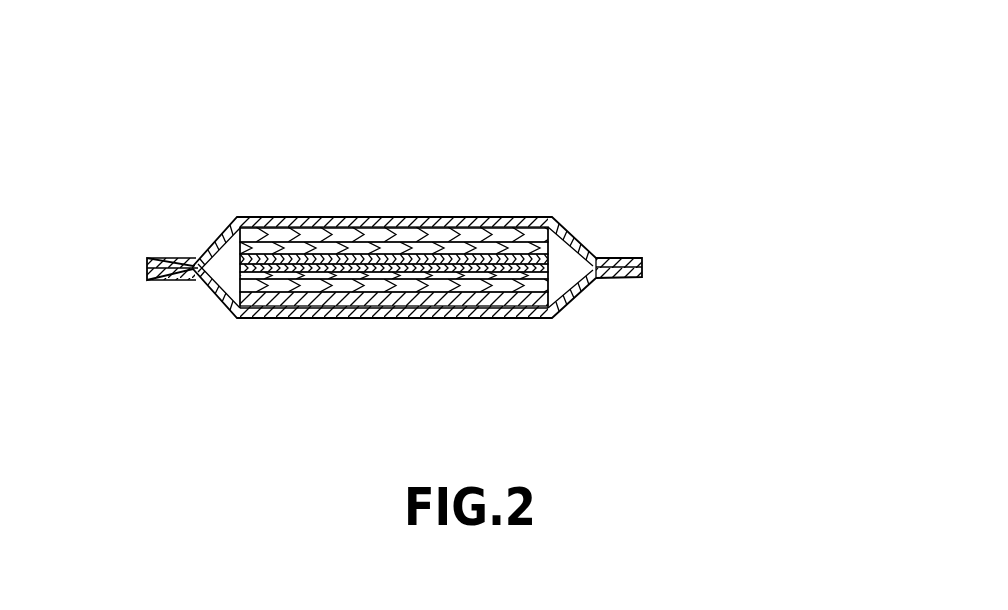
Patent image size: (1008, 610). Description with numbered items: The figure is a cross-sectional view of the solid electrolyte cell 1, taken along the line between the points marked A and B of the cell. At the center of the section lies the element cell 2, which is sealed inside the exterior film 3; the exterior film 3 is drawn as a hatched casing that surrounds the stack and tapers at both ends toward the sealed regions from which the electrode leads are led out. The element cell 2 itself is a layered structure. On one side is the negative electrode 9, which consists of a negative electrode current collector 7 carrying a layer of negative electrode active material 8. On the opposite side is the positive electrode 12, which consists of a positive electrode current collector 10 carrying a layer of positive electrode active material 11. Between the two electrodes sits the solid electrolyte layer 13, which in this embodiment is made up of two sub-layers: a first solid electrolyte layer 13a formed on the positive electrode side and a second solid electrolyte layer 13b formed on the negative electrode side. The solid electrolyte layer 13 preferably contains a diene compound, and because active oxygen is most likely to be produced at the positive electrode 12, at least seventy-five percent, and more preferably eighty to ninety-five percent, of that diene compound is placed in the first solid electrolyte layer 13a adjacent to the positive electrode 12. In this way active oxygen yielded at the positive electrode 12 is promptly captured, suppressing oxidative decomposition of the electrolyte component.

The solid electrolyte cell 1 is at (223, 182).
The element cell 2 is at (770, 122).
The exterior film 3 is at (408, 309).
The negative electrode current collector 7 is at (550, 235).
The negative electrode active material 8 is at (550, 248).
The negative electrode 9 is at (717, 122).
The positive electrode current collector 10 is at (557, 305).
The positive electrode active material 11 is at (557, 298).
The positive electrode 12 is at (718, 320).
The solid electrolyte layer 13 is at (723, 223).
The first solid electrolyte layer 13a is at (550, 270).
The second solid electrolyte layer 13b is at (550, 258).